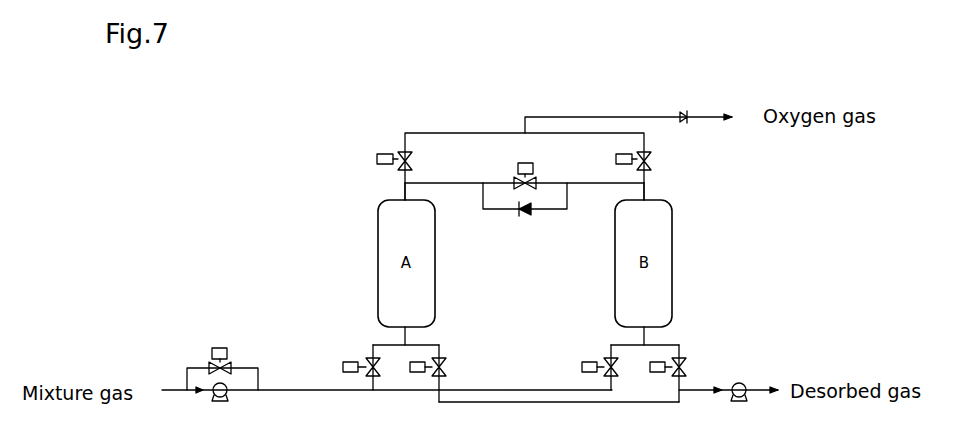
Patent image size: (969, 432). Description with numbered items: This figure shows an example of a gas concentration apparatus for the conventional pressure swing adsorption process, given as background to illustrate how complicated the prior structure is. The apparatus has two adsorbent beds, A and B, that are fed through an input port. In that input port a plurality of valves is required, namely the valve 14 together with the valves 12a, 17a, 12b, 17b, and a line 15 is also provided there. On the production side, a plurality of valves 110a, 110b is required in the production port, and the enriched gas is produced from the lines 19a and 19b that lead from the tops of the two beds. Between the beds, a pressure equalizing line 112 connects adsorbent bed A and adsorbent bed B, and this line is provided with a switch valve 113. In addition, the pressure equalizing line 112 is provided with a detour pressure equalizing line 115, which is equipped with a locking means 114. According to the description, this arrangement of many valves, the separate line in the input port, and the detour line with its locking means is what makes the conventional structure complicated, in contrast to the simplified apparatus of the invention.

The valve 110a is at (397, 168).
The valve 110b is at (651, 162).
The line 19a is at (404, 194).
The line 19b is at (647, 190).
The pressure equalizing line 112 is at (581, 183).
The switch valve 113 is at (517, 171).
The locking means 114 is at (530, 212).
The detour pressure equalizing line 115 is at (483, 211).
The valve 12a is at (362, 360).
The valve 12b is at (600, 360).
The valve 17a is at (447, 360).
The valve 17b is at (687, 360).
The valve 14 is at (209, 364).
The line 15 is at (246, 367).